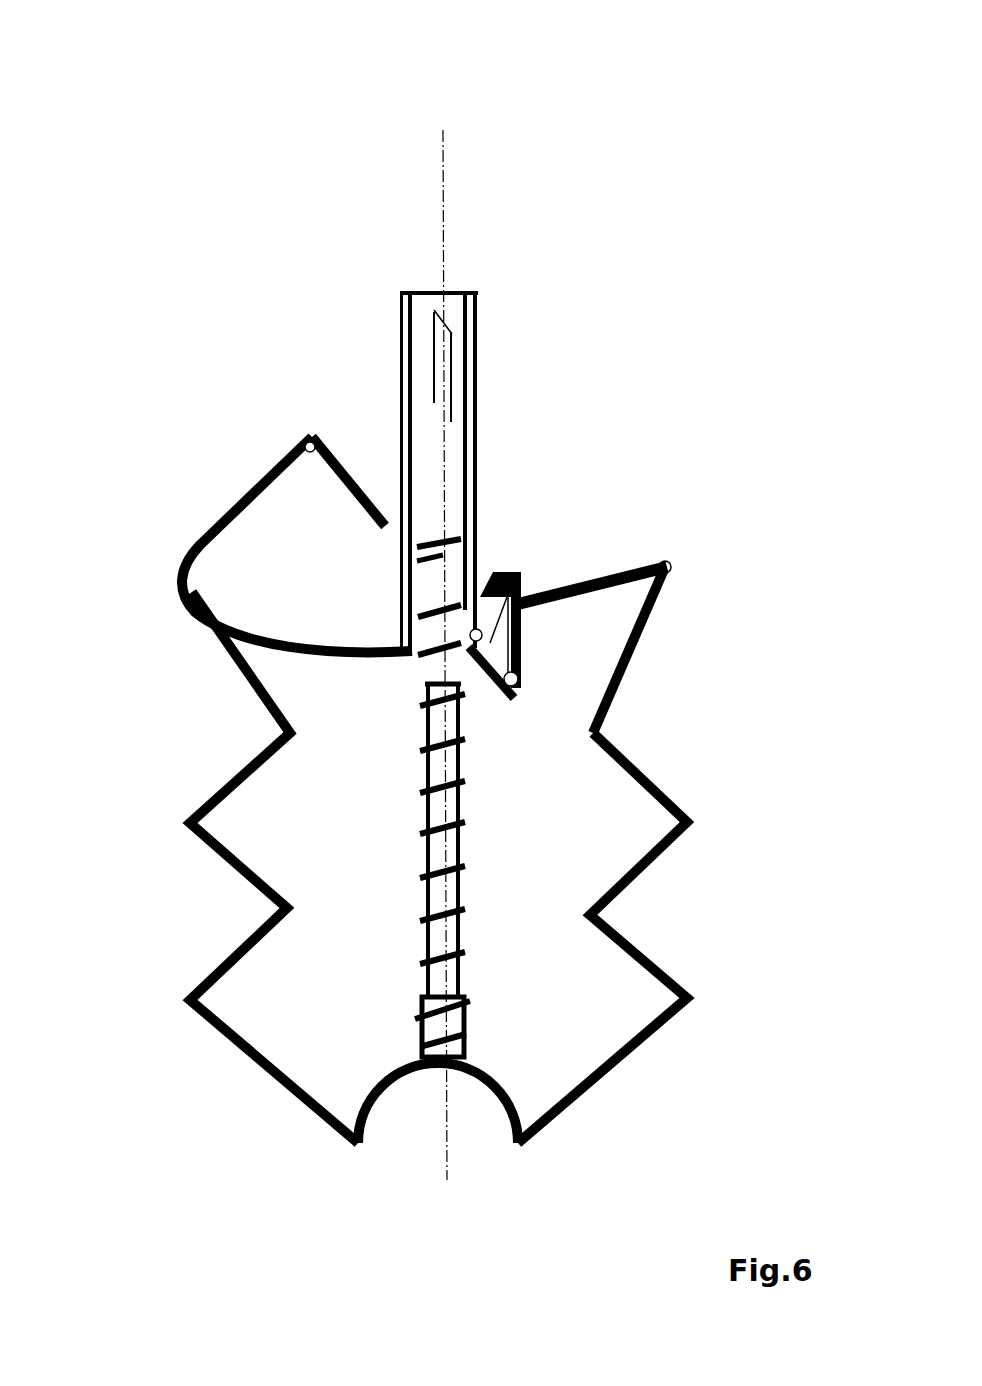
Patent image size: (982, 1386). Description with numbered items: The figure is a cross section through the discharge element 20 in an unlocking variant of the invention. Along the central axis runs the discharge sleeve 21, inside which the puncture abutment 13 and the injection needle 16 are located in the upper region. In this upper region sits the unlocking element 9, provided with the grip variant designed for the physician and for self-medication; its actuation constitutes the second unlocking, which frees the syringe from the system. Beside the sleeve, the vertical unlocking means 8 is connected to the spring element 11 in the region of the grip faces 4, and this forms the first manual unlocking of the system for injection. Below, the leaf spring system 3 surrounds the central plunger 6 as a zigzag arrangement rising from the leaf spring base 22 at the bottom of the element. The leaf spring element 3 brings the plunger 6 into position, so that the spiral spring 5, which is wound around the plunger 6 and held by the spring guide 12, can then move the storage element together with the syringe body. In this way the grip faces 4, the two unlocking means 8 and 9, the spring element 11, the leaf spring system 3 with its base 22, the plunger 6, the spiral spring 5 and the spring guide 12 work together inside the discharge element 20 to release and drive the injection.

The discharge element 20 is at (404, 268).
The puncture abutment 13 is at (478, 290).
The injection needle 16 is at (478, 323).
The discharge sleeve 21 is at (477, 417).
The locking cam 8 is at (507, 570).
The second locking means 9 is at (347, 473).
The grip faces 4 is at (255, 478).
The spring elements 11 is at (525, 600).
The spiral spring 5 is at (465, 776).
The leaf spring system 3 is at (235, 870).
The plunger 6 is at (428, 937).
The spring guide 12 is at (467, 1017).
The leaf spring base 22 is at (398, 1080).